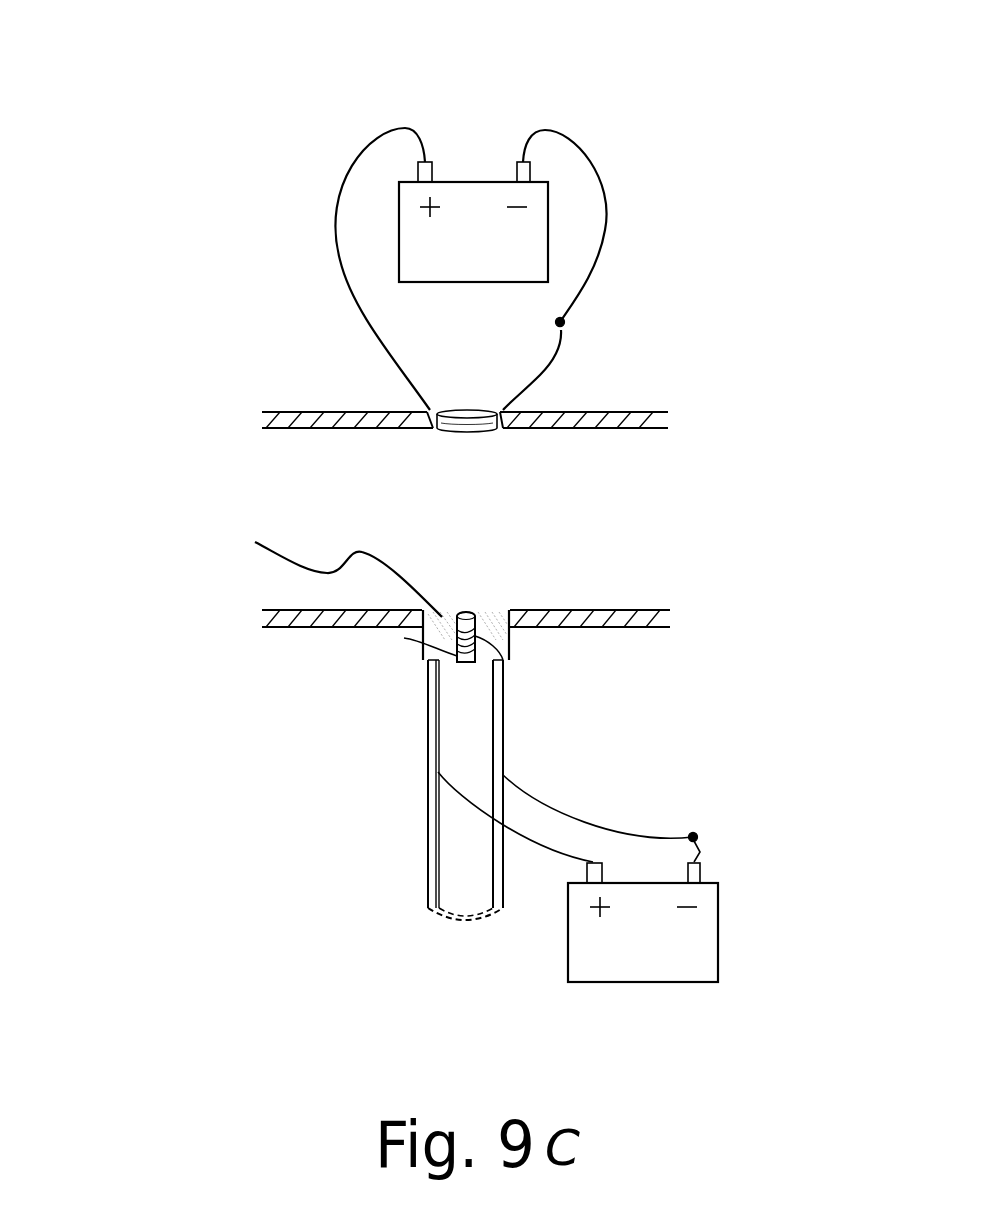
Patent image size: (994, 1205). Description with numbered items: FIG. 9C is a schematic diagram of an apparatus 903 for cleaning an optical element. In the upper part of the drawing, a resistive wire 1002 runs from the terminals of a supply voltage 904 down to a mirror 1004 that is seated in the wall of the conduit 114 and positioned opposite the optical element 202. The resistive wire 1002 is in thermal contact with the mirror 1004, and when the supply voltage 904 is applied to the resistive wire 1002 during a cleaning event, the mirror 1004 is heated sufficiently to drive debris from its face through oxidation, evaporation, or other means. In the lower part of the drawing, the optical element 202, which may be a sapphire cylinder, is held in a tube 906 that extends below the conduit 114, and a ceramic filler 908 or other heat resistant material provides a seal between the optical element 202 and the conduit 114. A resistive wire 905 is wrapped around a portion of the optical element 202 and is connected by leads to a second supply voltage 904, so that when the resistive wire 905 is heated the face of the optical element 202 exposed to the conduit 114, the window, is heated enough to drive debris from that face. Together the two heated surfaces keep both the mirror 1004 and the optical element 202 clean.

The apparatus for cleaning an optical element 903 is at (143, 107).
The supply voltage 904 is at (468, 182).
The resistive wire 1002 is at (350, 207).
The mirror 1004 is at (470, 412).
The conduit 114 is at (315, 412).
The optical element 202 is at (470, 592).
The ceramic filler 908 is at (301, 570).
The resistive wire 905 is at (404, 638).
The tube 906 is at (428, 780).